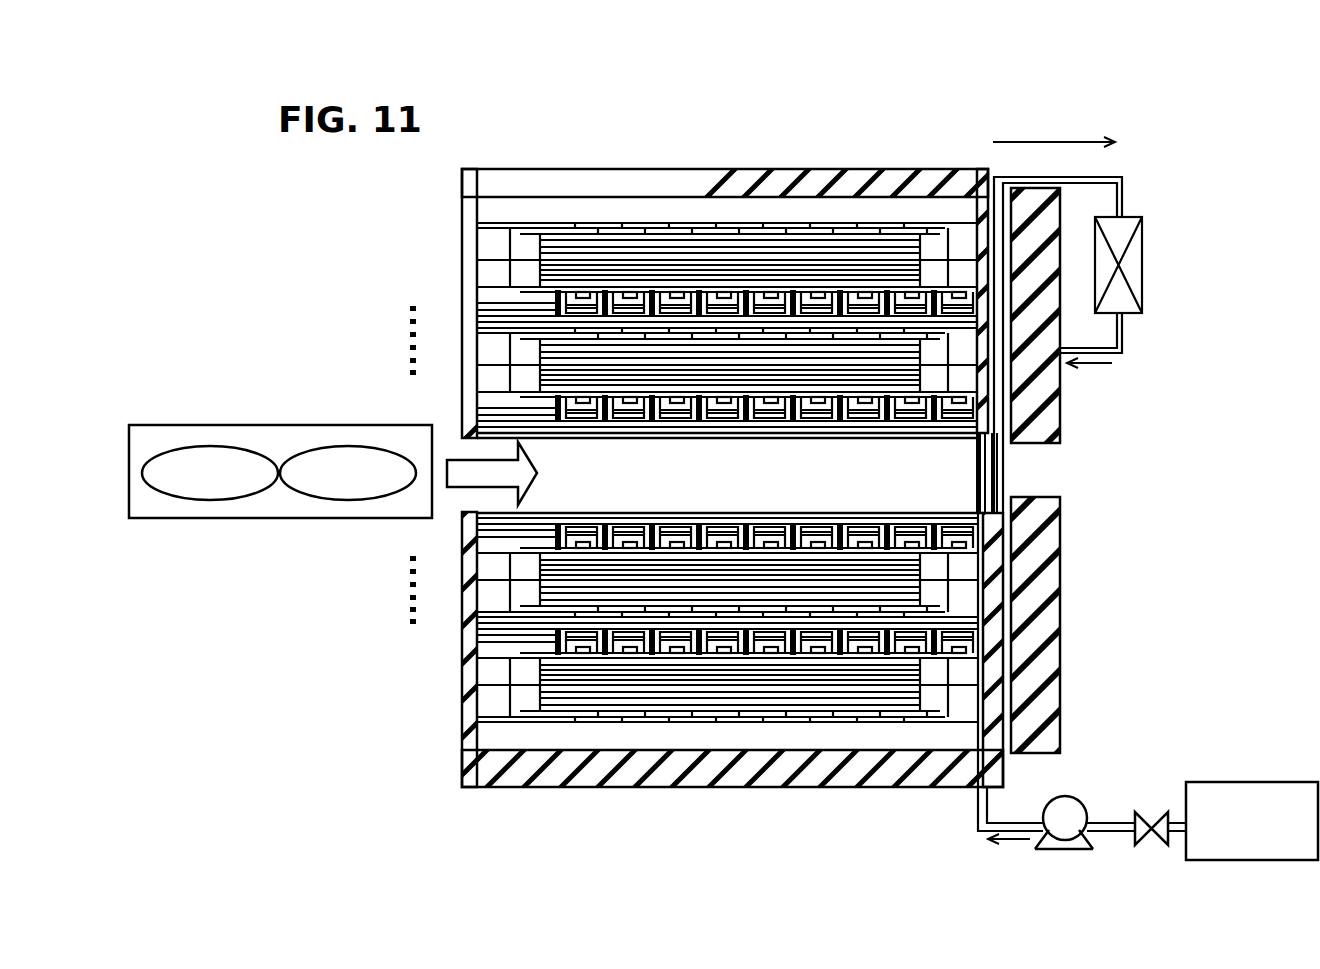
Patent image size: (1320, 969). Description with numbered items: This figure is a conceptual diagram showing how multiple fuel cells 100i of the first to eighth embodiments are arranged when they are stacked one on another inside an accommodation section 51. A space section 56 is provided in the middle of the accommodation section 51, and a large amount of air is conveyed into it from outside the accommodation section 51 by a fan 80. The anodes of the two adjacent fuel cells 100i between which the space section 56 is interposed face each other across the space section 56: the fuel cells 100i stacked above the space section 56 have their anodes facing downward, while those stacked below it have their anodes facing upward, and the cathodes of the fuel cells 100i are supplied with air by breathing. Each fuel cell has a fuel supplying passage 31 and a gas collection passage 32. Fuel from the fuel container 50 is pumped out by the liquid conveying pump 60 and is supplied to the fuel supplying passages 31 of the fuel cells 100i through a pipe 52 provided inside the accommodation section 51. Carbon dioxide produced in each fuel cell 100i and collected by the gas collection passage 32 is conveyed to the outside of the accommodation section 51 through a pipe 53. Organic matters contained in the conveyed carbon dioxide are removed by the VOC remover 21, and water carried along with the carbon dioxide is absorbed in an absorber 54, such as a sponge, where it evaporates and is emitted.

The accommodation section 51 is at (630, 169).
The fuel cells 100i is at (450, 208).
The fan 80 is at (262, 425).
The VOC remover 21 is at (1142, 228).
The absorber 54 is at (1060, 418).
The pipe 52 is at (986, 455).
The space section 56 is at (960, 470).
The pipe 53 is at (998, 490).
The fuel supplying passage 31 is at (943, 643).
The gas collection passage 32 is at (968, 628).
The liquid conveying pump 60 is at (1067, 850).
The fuel container 50 is at (1244, 782).